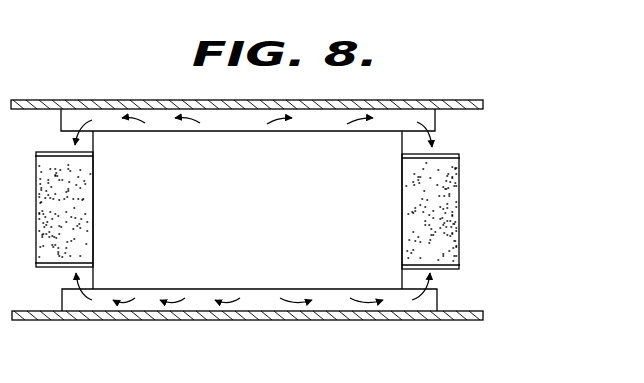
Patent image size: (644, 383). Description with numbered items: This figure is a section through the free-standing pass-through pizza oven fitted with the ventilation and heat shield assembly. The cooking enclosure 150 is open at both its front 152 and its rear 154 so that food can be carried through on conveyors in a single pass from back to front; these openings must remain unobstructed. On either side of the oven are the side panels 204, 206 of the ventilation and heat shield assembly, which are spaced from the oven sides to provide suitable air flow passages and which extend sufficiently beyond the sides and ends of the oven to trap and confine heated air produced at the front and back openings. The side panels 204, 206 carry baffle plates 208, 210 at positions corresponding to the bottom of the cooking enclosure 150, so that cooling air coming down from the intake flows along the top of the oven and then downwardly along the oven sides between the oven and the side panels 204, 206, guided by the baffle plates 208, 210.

The cooking enclosure 150 is at (228, 136).
The front 152 is at (92, 204).
The rear 154 is at (404, 207).
The side panel 204 is at (262, 101).
The side panel 206 is at (228, 321).
The baffle plate 208 is at (298, 131).
The baffle plate 210 is at (262, 289).